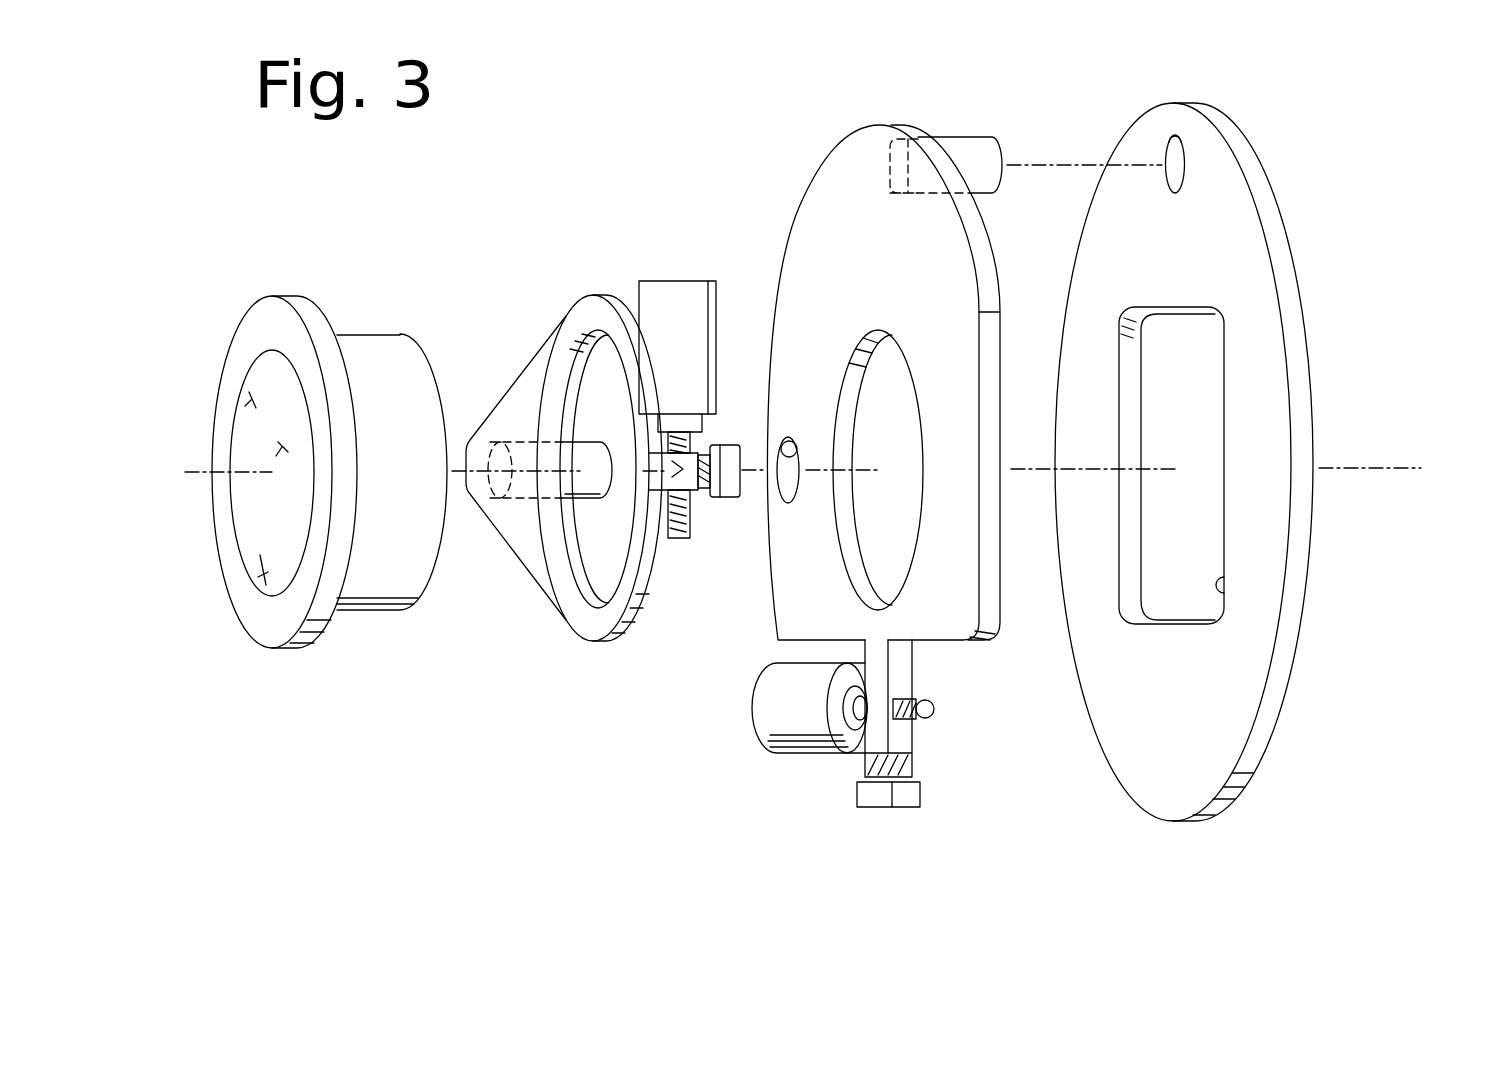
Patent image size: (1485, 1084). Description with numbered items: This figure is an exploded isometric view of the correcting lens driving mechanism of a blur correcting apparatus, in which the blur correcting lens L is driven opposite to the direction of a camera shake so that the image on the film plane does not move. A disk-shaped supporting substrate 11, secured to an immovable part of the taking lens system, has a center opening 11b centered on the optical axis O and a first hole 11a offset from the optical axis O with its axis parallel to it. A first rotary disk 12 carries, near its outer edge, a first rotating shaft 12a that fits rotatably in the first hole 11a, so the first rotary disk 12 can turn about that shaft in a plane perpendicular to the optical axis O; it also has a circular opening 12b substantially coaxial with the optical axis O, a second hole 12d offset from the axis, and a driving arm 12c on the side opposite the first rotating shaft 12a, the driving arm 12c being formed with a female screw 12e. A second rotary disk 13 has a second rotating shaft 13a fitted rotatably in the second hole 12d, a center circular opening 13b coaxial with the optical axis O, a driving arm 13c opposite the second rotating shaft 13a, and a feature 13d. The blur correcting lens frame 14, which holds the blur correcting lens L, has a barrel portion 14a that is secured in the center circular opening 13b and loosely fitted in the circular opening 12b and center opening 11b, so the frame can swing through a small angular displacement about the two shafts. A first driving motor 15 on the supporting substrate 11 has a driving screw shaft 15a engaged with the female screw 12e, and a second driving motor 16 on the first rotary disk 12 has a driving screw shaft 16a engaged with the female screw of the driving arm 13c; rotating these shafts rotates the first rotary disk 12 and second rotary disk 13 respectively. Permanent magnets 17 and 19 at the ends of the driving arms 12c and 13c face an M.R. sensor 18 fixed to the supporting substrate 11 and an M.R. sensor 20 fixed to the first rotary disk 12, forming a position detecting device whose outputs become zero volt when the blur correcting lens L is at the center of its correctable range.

The supporting substrate 11 is at (1308, 265).
The first hole 11a is at (1162, 152).
The center opening 11b is at (1216, 588).
The first rotary disk 12 is at (815, 178).
The first rotating shaft 12a is at (972, 137).
The circular opening 12b is at (856, 363).
The driving arm 12c is at (910, 745).
The second hole 12d is at (787, 437).
The female screw 12e is at (930, 694).
The second rotary disk 13 is at (572, 296).
The second rotating shaft 13a is at (588, 442).
The center circular opening 13b is at (566, 560).
The driving arm 13c is at (697, 505).
The hole 13d is at (642, 478).
The blur correcting lens frame 14 is at (291, 293).
The barrel portion 14a is at (376, 334).
The first driving motor 15 is at (762, 720).
The driving screw shaft 15a is at (935, 712).
The second driving motor 16 is at (664, 290).
The driving screw shaft 16a is at (676, 540).
The permanent magnet 17 is at (863, 763).
The M.R. sensor 18 is at (857, 800).
The permanent magnet 19 is at (698, 453).
The M.R. sensor 20 is at (722, 481).
The blur correcting lens L is at (243, 532).
The optical axis O is at (1347, 468).